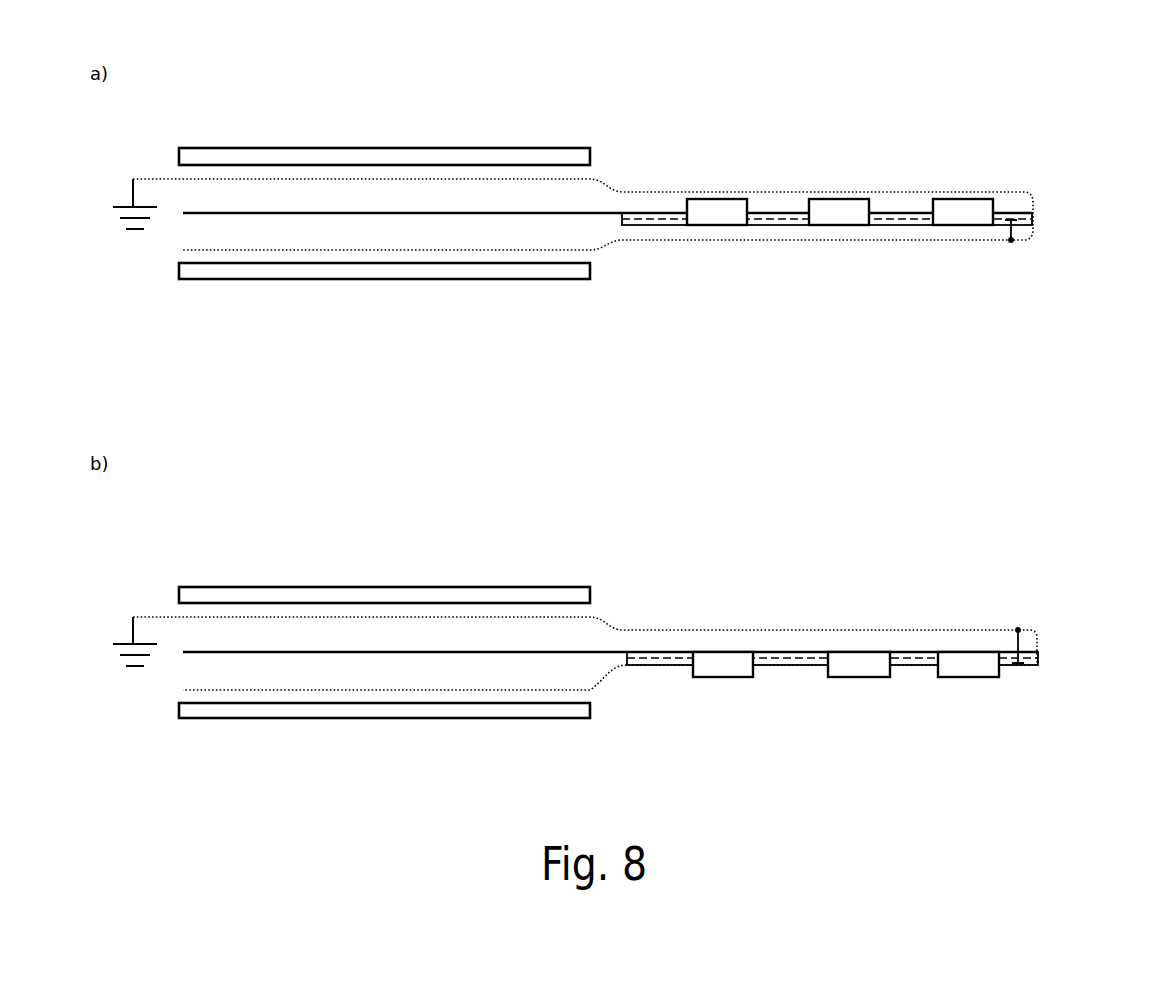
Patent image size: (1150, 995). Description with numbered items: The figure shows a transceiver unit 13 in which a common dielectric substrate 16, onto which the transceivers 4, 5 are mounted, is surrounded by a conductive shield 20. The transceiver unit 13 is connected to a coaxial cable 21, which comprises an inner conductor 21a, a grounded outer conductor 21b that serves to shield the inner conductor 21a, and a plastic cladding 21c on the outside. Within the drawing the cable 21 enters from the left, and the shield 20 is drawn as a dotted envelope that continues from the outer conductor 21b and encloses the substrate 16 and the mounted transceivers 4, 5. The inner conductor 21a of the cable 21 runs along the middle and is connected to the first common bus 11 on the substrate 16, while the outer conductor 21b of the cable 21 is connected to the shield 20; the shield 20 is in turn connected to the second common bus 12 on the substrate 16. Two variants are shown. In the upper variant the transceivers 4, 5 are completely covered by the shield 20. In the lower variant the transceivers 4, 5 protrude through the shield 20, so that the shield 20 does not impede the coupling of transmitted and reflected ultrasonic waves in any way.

The coaxial cable 21 is at (585, 365).
The inner conductor 21a is at (397, 651).
The outer conductor 21b is at (585, 384).
The plastic cladding 21c is at (427, 147).
The shield 20 is at (750, 192).
The second common bus 12 is at (640, 226).
The transceiver 4 is at (828, 475).
The transceiver 5 is at (717, 212).
The common dielectric substrate 16 is at (1000, 240).
The first common bus 11 is at (1012, 210).
The transceiver unit 13 is at (1063, 230).